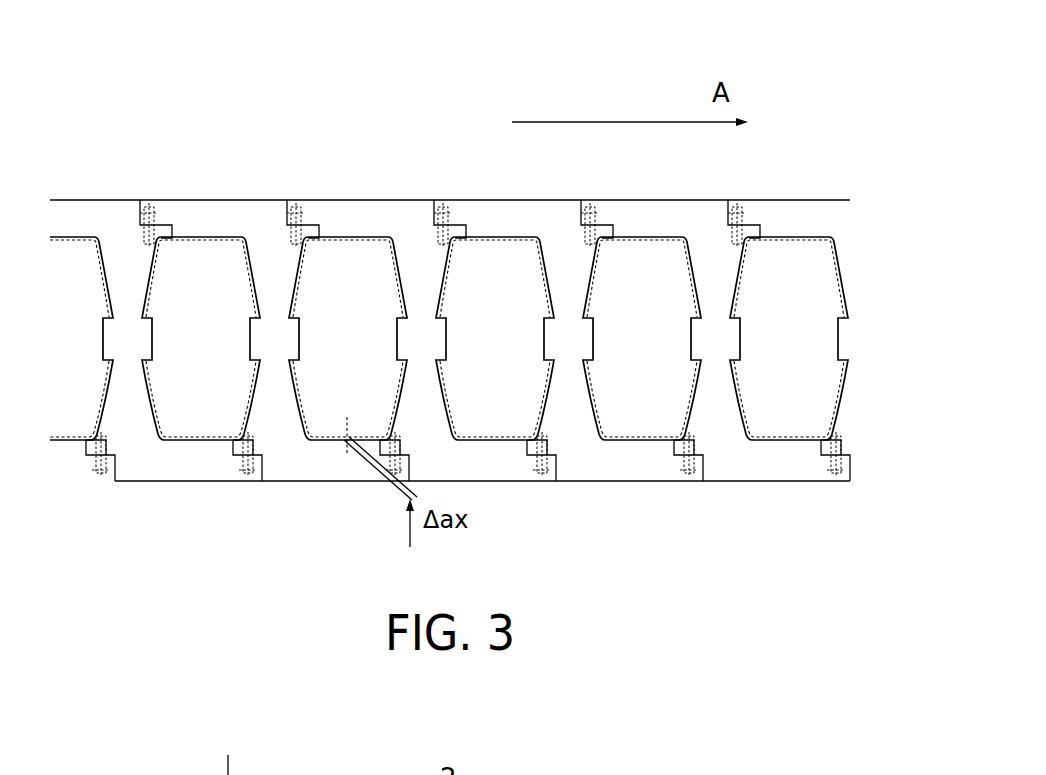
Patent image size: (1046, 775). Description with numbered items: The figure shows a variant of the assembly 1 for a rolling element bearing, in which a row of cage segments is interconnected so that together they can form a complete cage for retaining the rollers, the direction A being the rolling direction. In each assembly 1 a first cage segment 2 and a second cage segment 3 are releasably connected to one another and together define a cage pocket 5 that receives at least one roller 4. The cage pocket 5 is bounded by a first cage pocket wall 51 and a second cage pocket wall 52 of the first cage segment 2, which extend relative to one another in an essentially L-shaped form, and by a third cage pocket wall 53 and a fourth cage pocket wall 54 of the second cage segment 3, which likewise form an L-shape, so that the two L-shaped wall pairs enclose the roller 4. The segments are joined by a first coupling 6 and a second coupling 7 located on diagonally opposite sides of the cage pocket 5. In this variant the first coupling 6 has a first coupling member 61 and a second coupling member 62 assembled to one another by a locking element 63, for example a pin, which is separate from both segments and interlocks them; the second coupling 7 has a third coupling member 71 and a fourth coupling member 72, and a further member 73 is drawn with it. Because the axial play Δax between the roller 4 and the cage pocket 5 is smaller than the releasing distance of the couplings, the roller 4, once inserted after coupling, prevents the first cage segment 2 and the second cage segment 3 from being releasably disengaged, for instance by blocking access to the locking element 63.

The assembly 1 is at (400, 100).
The first cage segment 2 is at (322, 212).
The second cage segment 3 is at (293, 462).
The roller 4 is at (328, 302).
The cage pocket 5 is at (391, 238).
The first cage pocket wall 51 is at (404, 298).
The second cage pocket wall 52 is at (349, 237).
The third cage pocket wall 53 is at (295, 308).
The fourth cage pocket wall 54 is at (330, 442).
The first coupling 6 is at (296, 270).
The first coupling member 61 is at (156, 224).
The second coupling member 62 is at (303, 224).
The locking element 63 is at (450, 224).
The second coupling 7 is at (403, 444).
The third coupling member 71 is at (247, 456).
The fourth coupling member 72 is at (394, 456).
The inner fastening hook 73 is at (541, 456).